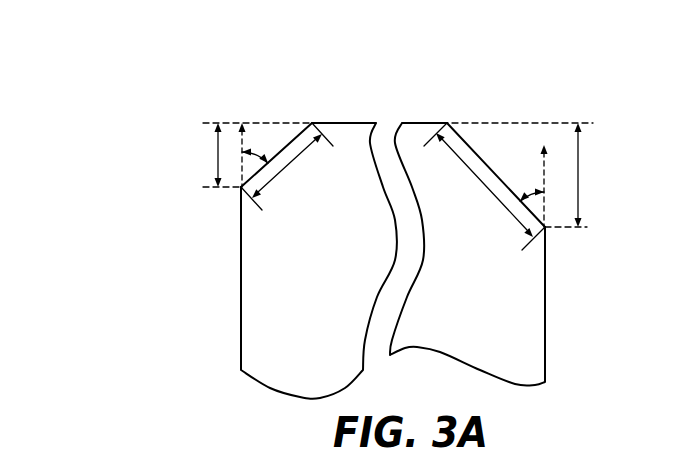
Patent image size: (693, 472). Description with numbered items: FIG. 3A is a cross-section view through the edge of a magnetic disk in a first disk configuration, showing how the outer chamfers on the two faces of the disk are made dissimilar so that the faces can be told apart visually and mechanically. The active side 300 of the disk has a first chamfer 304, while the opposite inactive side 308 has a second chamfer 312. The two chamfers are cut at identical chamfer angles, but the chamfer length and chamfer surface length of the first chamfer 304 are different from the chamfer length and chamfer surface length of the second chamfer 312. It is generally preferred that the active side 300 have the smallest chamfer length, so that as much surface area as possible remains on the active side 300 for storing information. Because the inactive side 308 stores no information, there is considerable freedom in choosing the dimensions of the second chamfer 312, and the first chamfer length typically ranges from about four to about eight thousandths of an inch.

The active side 300 is at (241, 268).
The first chamfer 304 is at (263, 107).
The inactive side 308 is at (545, 298).
The second chamfer 312 is at (522, 108).